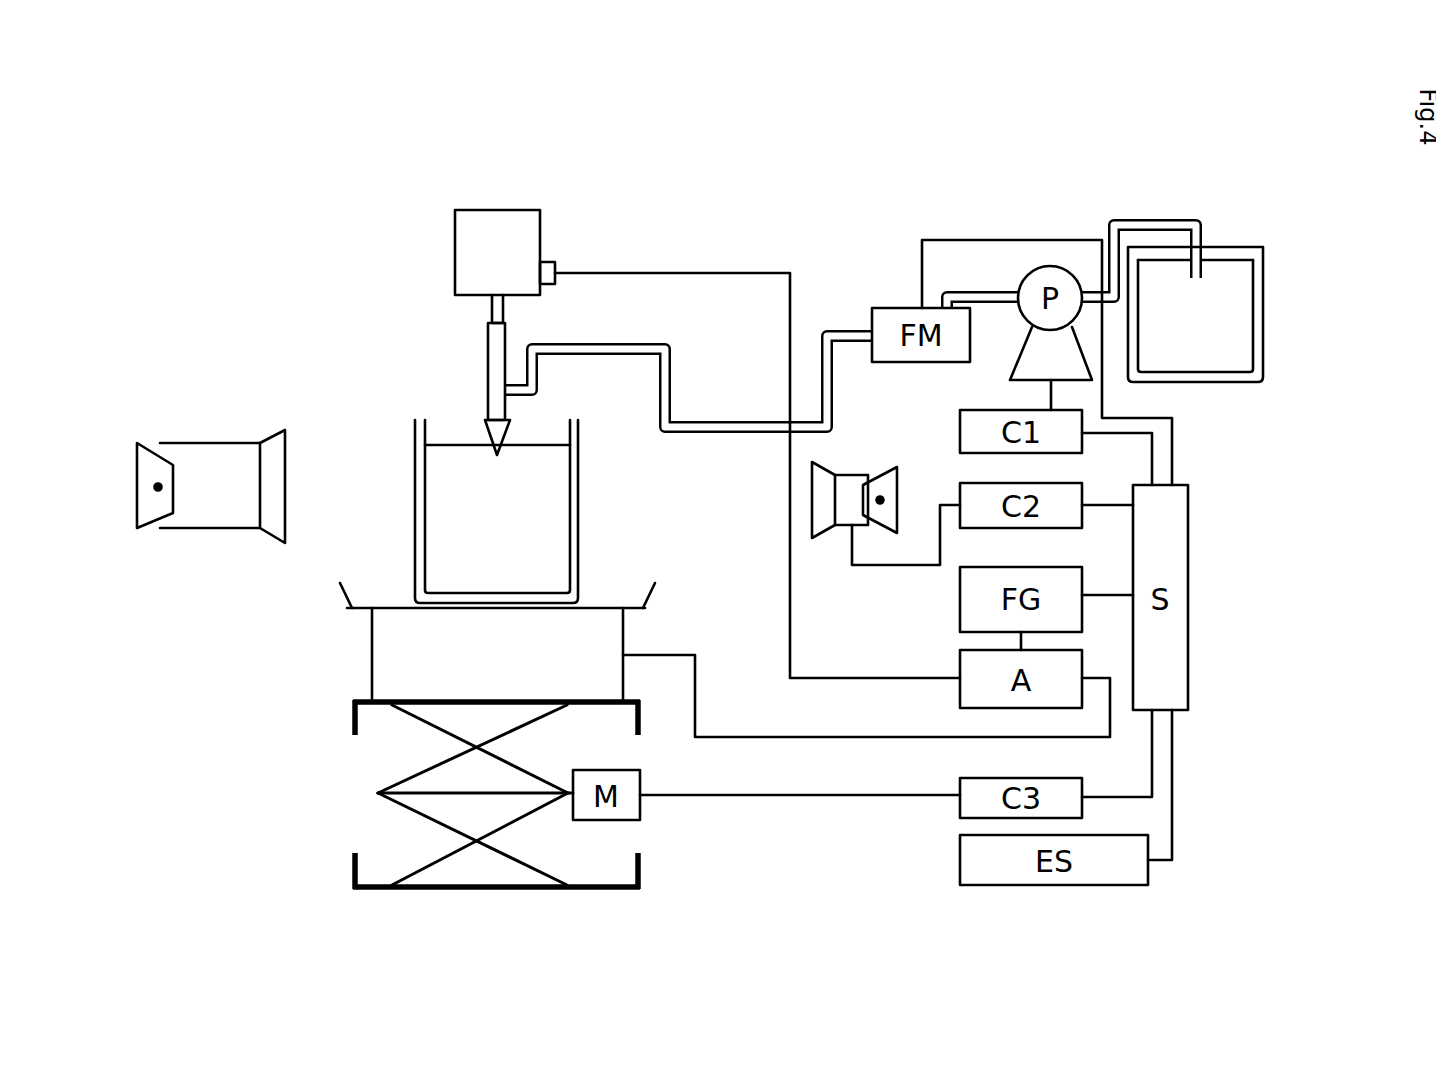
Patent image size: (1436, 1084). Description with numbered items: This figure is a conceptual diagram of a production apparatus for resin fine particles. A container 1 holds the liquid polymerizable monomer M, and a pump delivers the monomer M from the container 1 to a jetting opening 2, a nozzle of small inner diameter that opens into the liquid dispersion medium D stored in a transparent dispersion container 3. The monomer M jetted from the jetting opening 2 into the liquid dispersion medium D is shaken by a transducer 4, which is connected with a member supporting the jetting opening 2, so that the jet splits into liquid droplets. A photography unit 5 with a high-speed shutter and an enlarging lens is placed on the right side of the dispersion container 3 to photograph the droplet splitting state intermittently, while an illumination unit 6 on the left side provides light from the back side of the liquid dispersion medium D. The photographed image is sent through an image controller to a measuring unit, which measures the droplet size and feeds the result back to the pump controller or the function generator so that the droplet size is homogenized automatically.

The container for liquid polymerizable monomer 1 is at (1265, 310).
The jetting opening 2 is at (485, 436).
The dispersion container 3 is at (418, 495).
The transducer 4 is at (505, 213).
The photography unit 5 is at (848, 512).
The illumination unit 6 is at (190, 457).
The liquid dispersion medium D is at (468, 515).
The liquid polymerizable monomer M is at (1225, 277).